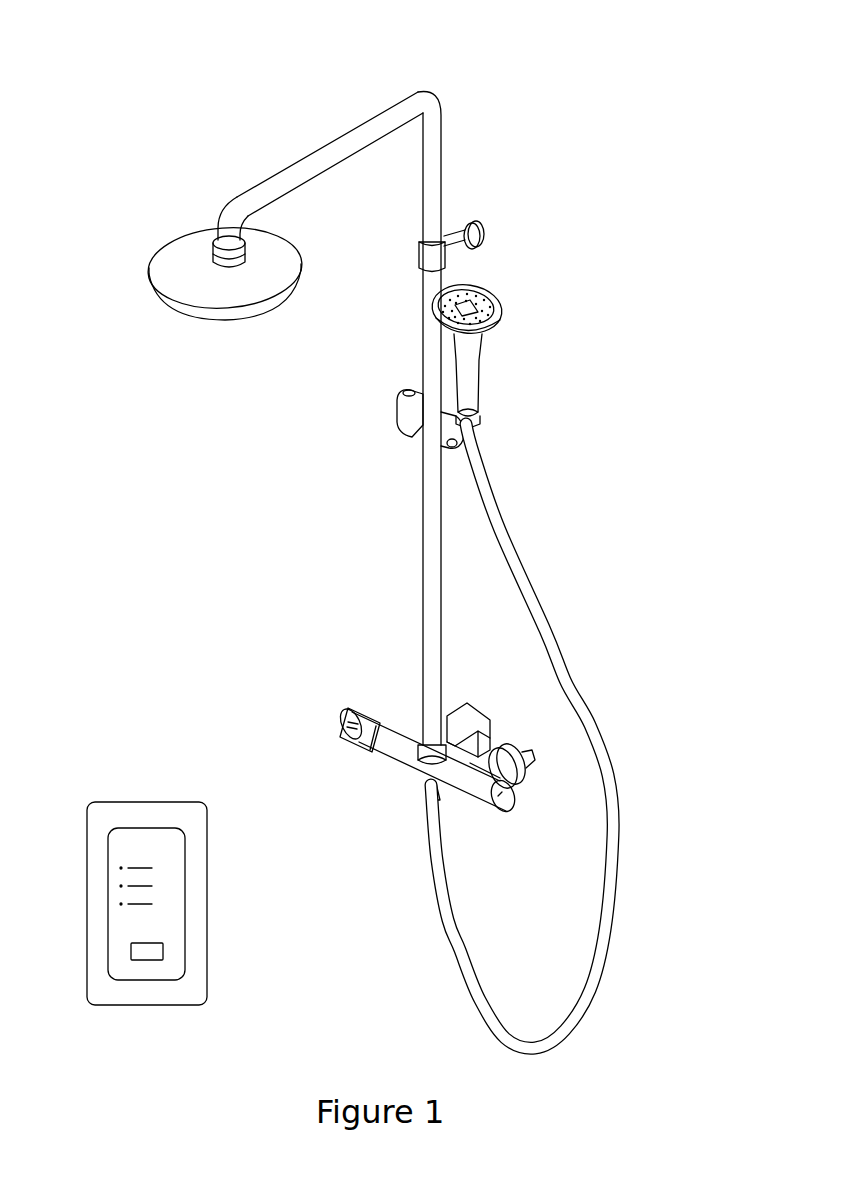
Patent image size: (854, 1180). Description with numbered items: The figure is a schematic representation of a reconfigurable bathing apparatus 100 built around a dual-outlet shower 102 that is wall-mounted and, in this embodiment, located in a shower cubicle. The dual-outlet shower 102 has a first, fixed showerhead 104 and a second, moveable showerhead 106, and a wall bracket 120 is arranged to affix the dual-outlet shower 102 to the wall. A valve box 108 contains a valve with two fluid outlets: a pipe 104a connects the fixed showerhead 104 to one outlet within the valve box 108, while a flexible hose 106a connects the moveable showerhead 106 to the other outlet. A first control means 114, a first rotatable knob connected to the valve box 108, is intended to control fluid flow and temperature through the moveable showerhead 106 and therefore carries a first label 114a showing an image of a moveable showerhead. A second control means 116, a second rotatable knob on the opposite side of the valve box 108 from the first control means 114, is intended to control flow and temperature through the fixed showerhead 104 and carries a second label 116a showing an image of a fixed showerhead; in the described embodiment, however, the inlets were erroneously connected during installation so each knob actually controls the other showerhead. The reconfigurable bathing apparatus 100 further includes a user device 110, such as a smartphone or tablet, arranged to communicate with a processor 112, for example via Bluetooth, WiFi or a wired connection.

The reconfigurable bathing apparatus 100 is at (202, 122).
The dual-outlet shower 102 is at (381, 98).
The fixed showerhead 104 is at (183, 246).
The pipe 104a is at (272, 176).
The moveable showerhead 106 is at (500, 316).
The flexible hose 106a is at (613, 830).
The valve box 108 is at (413, 753).
The user device 110 is at (98, 793).
The processor 112 is at (465, 720).
The first control means 114 is at (360, 714).
The first label 114a is at (349, 729).
The second control means 116 is at (480, 798).
The second label 116a is at (485, 818).
The wall bracket 120 is at (485, 228).